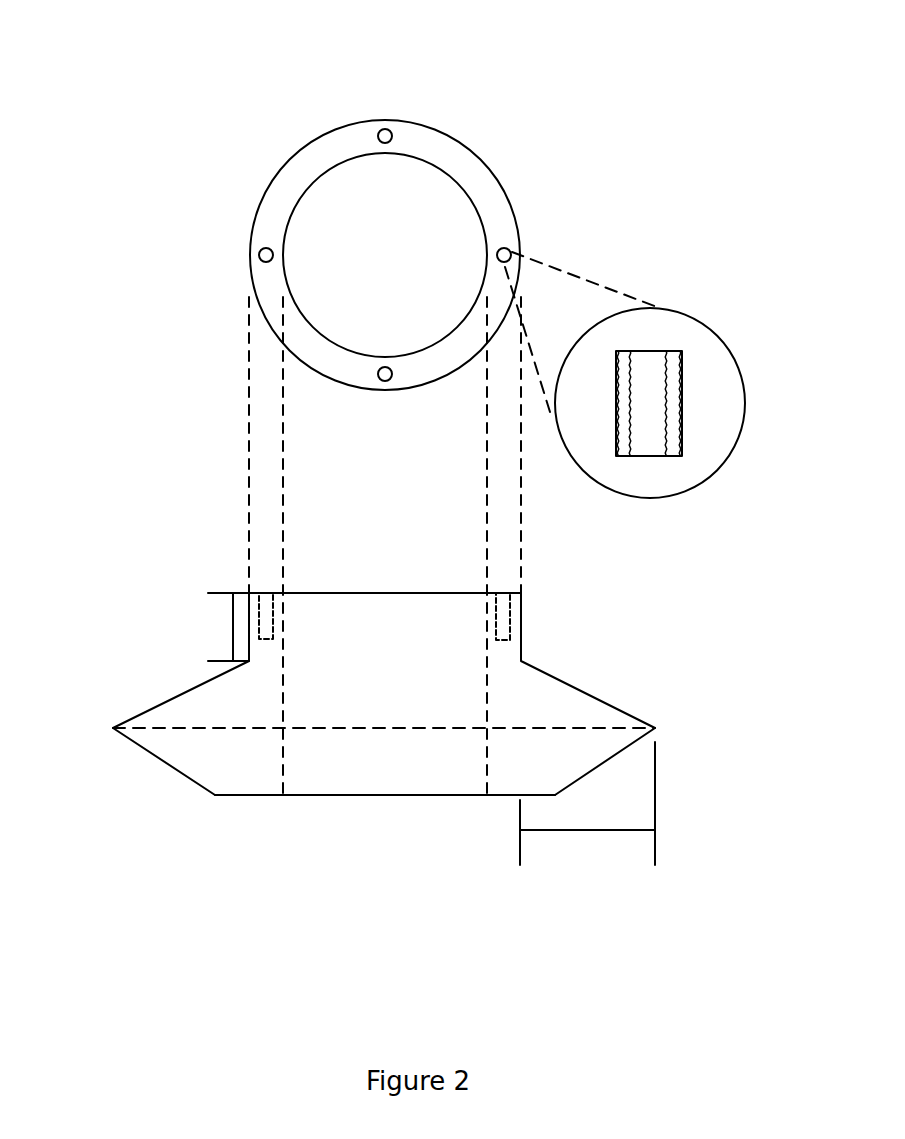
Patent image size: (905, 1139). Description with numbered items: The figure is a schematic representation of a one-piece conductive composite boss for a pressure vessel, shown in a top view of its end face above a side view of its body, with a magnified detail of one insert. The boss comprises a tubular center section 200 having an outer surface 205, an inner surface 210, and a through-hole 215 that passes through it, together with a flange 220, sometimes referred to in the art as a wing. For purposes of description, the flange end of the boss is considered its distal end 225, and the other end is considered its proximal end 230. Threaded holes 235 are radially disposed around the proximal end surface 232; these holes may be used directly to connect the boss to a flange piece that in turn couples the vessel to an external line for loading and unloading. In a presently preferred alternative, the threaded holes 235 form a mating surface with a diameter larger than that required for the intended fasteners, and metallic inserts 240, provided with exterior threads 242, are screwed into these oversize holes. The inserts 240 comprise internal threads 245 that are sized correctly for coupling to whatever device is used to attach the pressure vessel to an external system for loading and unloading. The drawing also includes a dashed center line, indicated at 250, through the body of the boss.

The tubular center section 200 is at (213, 627).
The outer surface 205 is at (513, 212).
The inner surface 210 is at (292, 228).
The through-hole 215 is at (418, 212).
The flange 220 is at (587, 803).
The distal end 225 is at (423, 796).
The proximal end 230 is at (387, 592).
The proximal end surface 232 is at (301, 178).
The threaded holes 235 is at (388, 135).
The inserts 240 is at (682, 333).
The exterior threads 242 is at (683, 415).
The internal threads 245 is at (638, 418).
The center line 250 is at (247, 730).